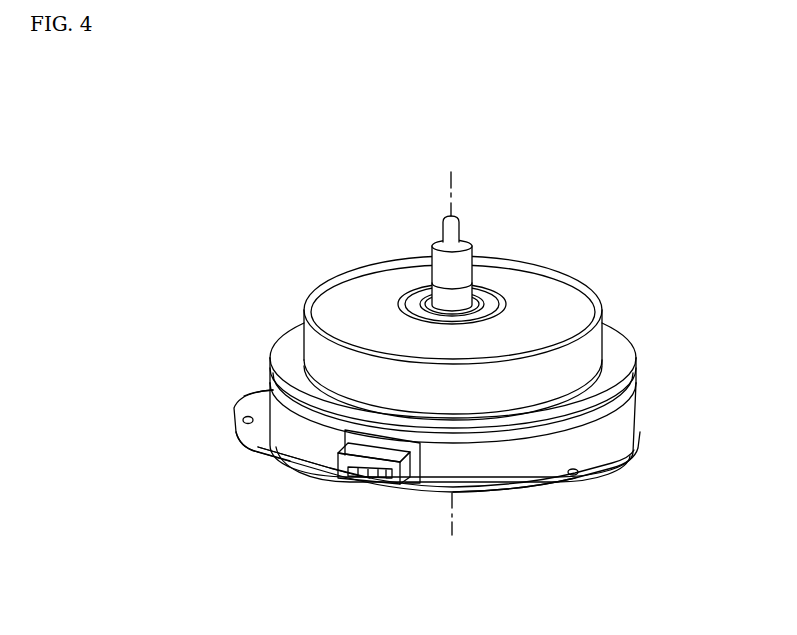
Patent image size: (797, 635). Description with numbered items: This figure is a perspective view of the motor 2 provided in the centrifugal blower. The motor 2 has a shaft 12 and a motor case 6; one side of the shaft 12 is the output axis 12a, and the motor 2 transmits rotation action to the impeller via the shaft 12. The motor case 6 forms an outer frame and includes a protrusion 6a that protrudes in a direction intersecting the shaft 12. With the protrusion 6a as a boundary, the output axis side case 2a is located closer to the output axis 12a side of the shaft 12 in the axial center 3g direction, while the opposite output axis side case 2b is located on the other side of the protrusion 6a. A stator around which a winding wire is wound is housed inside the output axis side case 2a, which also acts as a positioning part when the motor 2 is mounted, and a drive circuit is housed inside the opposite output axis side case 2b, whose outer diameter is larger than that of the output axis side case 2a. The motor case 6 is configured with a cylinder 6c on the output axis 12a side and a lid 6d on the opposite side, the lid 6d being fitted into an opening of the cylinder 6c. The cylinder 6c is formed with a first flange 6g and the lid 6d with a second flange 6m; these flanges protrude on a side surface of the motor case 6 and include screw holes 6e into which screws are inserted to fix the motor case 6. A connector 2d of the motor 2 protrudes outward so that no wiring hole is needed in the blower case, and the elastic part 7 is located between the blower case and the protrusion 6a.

The motor 2 is at (325, 262).
The output axis side case 2a is at (558, 374).
The opposite output axis side case 2b is at (573, 438).
The connector 2d is at (375, 458).
The axial center 3g is at (451, 200).
The elastic part 7 is at (287, 367).
The motor case 6 is at (640, 498).
The protrusion 6a is at (274, 395).
The cylinder 6c is at (460, 345).
The lid 6d is at (508, 489).
The screw hole 6e is at (236, 424).
The first flange 6g is at (263, 432).
The second flange 6m is at (287, 462).
The shaft 12 is at (458, 264).
The output axis 12a is at (593, 222).